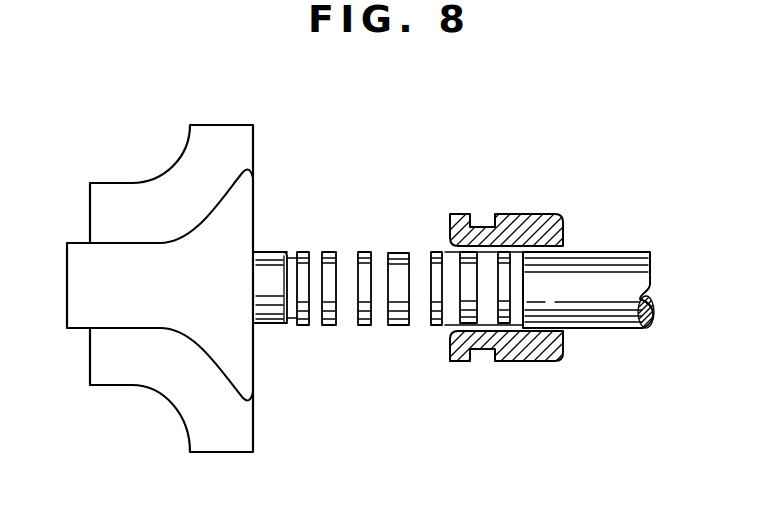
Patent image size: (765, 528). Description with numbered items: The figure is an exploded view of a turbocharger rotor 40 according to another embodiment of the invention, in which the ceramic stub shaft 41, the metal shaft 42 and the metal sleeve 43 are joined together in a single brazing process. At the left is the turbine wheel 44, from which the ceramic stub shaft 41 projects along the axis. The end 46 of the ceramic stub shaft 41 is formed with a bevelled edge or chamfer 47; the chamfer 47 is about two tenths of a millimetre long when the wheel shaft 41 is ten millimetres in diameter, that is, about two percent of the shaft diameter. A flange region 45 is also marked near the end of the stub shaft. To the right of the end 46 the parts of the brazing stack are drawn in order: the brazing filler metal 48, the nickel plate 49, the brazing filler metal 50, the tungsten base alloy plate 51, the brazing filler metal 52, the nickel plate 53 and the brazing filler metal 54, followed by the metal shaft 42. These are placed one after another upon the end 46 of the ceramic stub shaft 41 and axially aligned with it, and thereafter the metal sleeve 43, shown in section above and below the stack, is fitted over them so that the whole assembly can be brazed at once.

The turbocharger rotor 40 is at (355, 204).
The ceramic stub shaft 41 is at (272, 323).
The metal shaft 42 is at (603, 257).
The metal sleeve 43 is at (547, 342).
The turbine wheel 44 is at (145, 182).
The flange 45 is at (283, 250).
The end of the ceramic stub shaft 46 is at (290, 303).
The chamfer 47 is at (288, 293).
The brazing filler metal 48 is at (305, 250).
The nickel plate 49 is at (328, 323).
The brazing filler metal 50 is at (365, 251).
The tungsten base alloy plate 51 is at (397, 323).
The brazing filler metal 52 is at (437, 250).
The nickel plate 53 is at (468, 325).
The brazing filler metal 54 is at (503, 253).